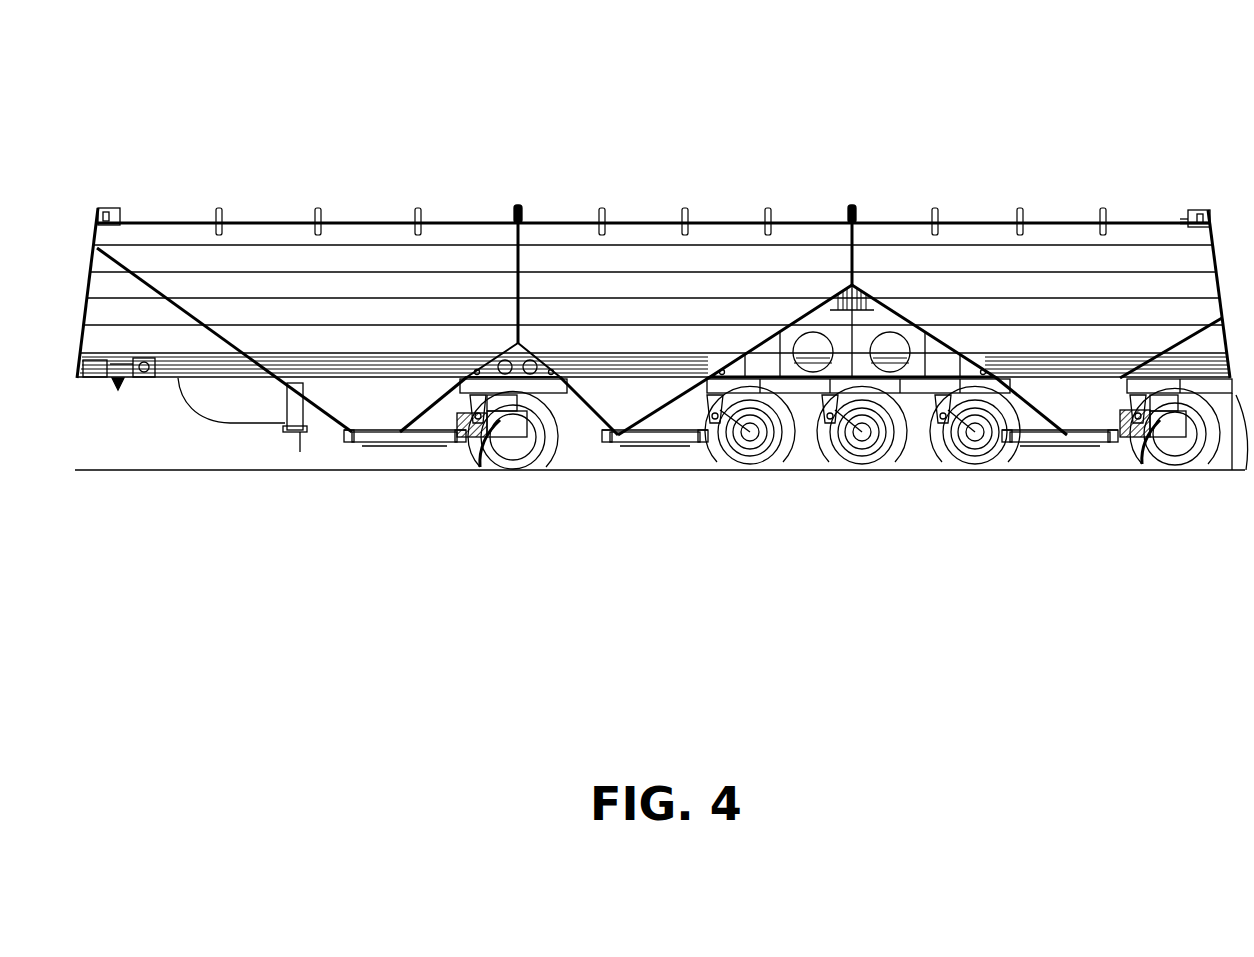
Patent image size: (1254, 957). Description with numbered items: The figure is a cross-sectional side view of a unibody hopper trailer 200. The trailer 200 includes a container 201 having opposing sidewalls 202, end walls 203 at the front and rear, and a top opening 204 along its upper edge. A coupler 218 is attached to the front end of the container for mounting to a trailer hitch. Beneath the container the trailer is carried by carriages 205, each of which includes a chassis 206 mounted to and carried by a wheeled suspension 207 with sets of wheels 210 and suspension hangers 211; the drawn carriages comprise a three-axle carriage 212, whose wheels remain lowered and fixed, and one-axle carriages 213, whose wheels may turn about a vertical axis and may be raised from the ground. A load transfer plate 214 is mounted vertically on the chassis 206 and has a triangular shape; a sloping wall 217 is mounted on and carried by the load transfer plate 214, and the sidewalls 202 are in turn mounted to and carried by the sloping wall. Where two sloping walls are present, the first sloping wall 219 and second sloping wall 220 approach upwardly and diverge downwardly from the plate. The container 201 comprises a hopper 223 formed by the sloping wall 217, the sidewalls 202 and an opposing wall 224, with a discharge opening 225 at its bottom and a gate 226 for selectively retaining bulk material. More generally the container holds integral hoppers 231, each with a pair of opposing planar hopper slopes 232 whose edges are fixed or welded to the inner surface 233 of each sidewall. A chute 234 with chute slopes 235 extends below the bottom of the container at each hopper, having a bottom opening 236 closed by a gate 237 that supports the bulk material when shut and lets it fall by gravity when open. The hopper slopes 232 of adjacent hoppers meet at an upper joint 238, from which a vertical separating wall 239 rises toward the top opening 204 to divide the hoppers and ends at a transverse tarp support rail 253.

The unibody hopper trailer 200 is at (676, 78).
The container 201 is at (148, 222).
The sidewalls 202 is at (265, 240).
The end walls 203 is at (98, 205).
The top opening 204 is at (670, 208).
The carriage 205 is at (580, 420).
The chassis 206 is at (1147, 392).
The wheeled suspension 207 is at (560, 466).
The wheels 210 is at (520, 466).
The suspension hangers 211 is at (438, 440).
The three-axle carriage 212 is at (883, 532).
The one-axle carriage 213 is at (870, 524).
The load transfer plate 214 is at (540, 355).
The sloping wall 217 is at (840, 282).
The coupler 218 is at (120, 380).
The first sloping wall 219 is at (641, 278).
The second sloping wall 220 is at (891, 325).
The hopper 223 is at (719, 164).
The wall 224 is at (180, 245).
The discharge opening 225 is at (362, 360).
The gate 226 is at (372, 445).
The integral hoppers 231 is at (355, 208).
The hopper slopes 232 is at (747, 276).
The inner surface 233 is at (523, 272).
The chute 234 is at (343, 432).
The chute slopes 235 is at (440, 420).
The bottom opening 236 is at (353, 415).
The gate 237 is at (757, 532).
The upper joint 238 is at (530, 340).
The vertical separating wall 239 is at (540, 345).
The tarp support rail 253 is at (1036, 222).